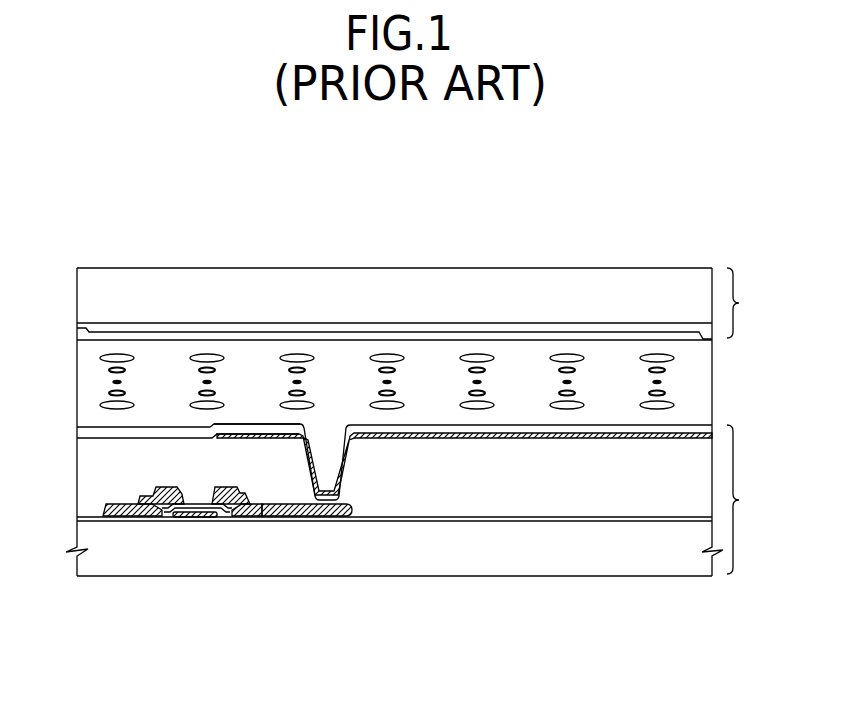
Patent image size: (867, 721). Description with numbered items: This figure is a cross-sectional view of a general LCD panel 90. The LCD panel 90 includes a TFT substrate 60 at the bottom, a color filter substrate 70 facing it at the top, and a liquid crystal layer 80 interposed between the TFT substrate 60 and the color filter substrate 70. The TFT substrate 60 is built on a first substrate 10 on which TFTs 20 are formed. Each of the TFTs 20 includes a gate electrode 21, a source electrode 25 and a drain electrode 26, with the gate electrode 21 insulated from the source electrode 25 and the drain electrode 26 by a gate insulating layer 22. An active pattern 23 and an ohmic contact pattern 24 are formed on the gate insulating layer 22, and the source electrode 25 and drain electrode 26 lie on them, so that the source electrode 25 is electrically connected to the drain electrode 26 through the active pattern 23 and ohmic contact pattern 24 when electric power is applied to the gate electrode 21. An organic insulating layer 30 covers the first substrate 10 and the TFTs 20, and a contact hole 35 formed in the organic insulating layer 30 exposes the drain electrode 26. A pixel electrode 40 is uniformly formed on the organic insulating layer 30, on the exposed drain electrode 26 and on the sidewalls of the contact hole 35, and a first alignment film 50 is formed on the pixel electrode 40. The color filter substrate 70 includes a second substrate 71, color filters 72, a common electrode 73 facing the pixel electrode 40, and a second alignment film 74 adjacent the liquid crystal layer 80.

The LCD panel 90 is at (422, 152).
The color filter substrate 70 is at (422, 276).
The second substrate 71 is at (610, 282).
The color filters 72 is at (552, 338).
The common electrode 73 is at (477, 336).
The second alignment film 74 is at (396, 340).
The liquid crystal layer 80 is at (700, 388).
The TFT substrate 60 is at (422, 518).
The first substrate 10 is at (565, 553).
The TFTs 20 is at (223, 576).
The gate electrode 21 is at (202, 517).
The gate insulating layer 22 is at (163, 517).
The active pattern 23 is at (152, 517).
The ohmic contact pattern 24 is at (233, 517).
The source electrode 25 is at (113, 517).
The drain electrode 26 is at (307, 562).
The organic insulating layer 30 is at (422, 507).
The contact hole 35 is at (318, 441).
The pixel electrode 40 is at (487, 437).
The first alignment film 50 is at (625, 437).